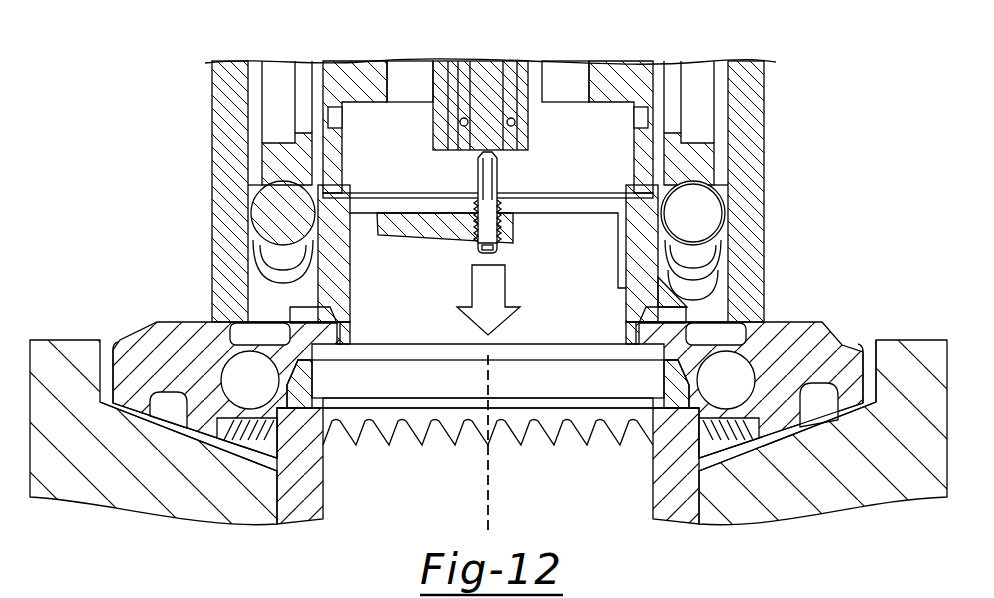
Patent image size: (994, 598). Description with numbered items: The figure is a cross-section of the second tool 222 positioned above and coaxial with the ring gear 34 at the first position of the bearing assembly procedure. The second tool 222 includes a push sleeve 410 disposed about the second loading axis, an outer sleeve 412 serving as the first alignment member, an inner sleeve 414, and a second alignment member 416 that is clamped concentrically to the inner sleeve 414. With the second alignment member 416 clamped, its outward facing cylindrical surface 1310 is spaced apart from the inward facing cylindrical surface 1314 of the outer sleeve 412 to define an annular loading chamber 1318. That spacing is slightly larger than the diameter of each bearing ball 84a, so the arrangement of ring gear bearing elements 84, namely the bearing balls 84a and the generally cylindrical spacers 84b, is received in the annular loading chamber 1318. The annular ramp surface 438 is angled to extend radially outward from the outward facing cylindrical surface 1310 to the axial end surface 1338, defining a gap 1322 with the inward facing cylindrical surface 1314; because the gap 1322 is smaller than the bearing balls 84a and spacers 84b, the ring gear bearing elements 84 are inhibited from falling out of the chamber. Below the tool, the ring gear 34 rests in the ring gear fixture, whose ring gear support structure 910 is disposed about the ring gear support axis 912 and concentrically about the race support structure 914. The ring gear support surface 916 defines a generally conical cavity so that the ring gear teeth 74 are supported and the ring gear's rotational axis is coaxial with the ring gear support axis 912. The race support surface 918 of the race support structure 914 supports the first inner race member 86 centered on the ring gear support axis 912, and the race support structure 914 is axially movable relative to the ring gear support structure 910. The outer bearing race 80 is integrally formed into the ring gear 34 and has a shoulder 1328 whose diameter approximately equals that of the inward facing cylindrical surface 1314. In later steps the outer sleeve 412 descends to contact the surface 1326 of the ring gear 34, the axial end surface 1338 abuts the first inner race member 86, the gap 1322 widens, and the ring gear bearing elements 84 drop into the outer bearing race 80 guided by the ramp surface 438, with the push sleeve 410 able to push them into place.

The second tool 222 is at (146, 50).
The outer sleeve 412 is at (230, 72).
The inner sleeve 414 is at (352, 72).
The second alignment member 416 is at (390, 198).
The push sleeve 410 is at (698, 148).
The bearing balls 84a is at (280, 195).
The outward facing cylindrical surface 1310 is at (317, 232).
The inward facing cylindrical surface 1314 is at (247, 268).
The surface 1326 is at (172, 320).
The axial end surface 1338 is at (290, 347).
The ring gear bearing elements 84 is at (656, 245).
The spacers 84b is at (725, 188).
The annular loading chamber 1318 is at (722, 252).
The annular ramp surface 438 is at (680, 297).
The ring gear 34 is at (817, 393).
The ring gear support structure 910 is at (917, 352).
The first inner race member 86 is at (412, 350).
The race support surface 918 is at (312, 418).
The gap 1322 is at (697, 328).
The outer bearing race 80 is at (205, 378).
The race support structure 914 is at (313, 485).
The ring gear support axis 912 is at (488, 472).
The shoulder 1328 is at (722, 330).
The ring gear teeth 74 is at (817, 413).
The ring gear support surface 916 is at (152, 428).